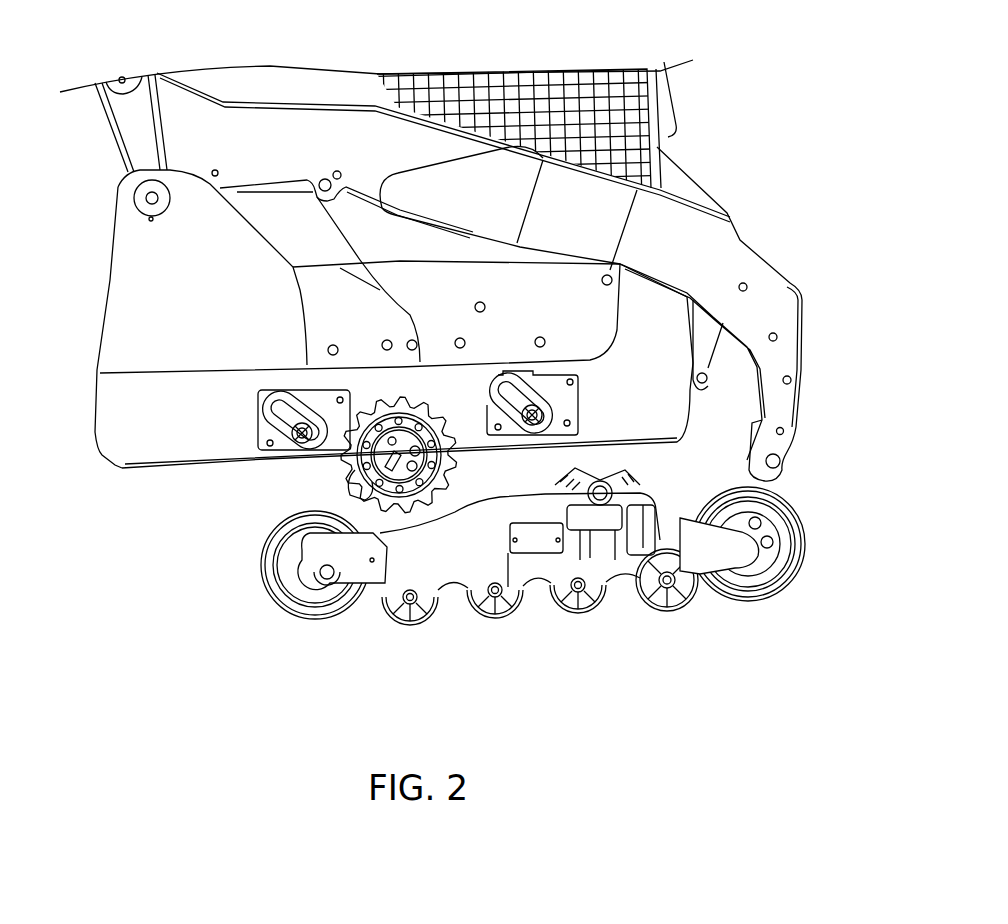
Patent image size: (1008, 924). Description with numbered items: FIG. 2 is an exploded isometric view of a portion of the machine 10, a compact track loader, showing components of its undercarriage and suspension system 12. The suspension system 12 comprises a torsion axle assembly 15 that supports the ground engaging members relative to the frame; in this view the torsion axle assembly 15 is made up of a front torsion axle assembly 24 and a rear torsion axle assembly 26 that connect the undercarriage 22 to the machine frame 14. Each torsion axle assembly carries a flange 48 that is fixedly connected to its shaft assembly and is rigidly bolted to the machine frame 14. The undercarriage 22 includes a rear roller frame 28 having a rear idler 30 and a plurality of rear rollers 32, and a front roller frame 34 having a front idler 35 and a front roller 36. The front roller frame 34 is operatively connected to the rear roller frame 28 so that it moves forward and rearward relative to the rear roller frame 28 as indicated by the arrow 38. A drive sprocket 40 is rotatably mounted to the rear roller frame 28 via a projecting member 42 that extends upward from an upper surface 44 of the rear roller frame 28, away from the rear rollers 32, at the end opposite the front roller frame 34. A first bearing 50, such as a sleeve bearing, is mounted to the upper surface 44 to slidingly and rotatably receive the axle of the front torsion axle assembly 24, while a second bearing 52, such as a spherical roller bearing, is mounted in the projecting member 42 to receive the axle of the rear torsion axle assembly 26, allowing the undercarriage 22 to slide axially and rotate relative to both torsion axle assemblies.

The machine 10 is at (790, 98).
The suspension system 12 is at (610, 355).
The machine frame 14 is at (677, 378).
The torsion axle assembly 15 is at (245, 372).
The undercarriage 22 is at (215, 557).
The front torsion axle assembly 24 is at (612, 405).
The rear torsion axle assembly 26 is at (228, 428).
The rear roller frame 28 is at (433, 553).
The rear idler 30 is at (263, 606).
The rear rollers 32 is at (597, 648).
The front roller frame 34 is at (727, 545).
The front idler 35 is at (787, 530).
The front roller 36 is at (683, 603).
The arrow 38 is at (663, 477).
The drive sprocket 40 is at (453, 427).
The projecting member 42 is at (453, 490).
The upper surface 44 is at (490, 507).
The flange 48 is at (318, 412).
The first bearing 50 is at (617, 540).
The second bearing 52 is at (355, 460).